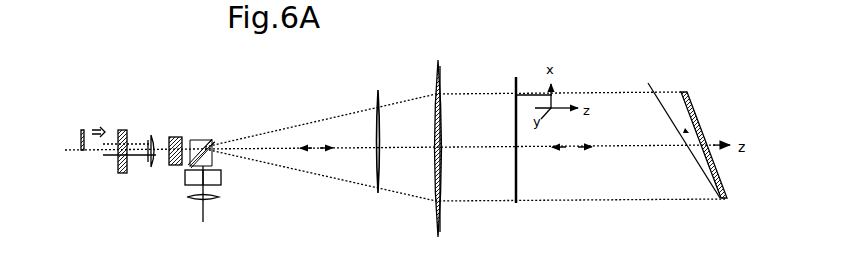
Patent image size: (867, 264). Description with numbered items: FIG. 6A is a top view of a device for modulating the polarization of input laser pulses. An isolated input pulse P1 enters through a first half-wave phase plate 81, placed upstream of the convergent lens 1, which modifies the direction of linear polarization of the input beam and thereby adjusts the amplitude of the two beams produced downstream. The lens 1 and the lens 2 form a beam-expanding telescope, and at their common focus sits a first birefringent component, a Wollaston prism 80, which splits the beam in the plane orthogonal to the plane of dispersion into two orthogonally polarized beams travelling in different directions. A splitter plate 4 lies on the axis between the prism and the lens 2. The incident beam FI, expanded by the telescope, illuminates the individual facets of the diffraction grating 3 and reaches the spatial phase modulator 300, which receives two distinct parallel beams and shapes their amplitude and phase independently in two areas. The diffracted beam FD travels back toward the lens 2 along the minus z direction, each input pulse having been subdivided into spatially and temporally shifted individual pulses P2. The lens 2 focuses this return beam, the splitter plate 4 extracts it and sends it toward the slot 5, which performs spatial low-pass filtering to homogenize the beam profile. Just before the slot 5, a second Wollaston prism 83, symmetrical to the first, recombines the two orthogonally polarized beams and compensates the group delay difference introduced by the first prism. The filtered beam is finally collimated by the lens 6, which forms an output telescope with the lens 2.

The input pulse P1 is at (82, 148).
The first half-wave phase plate 81 is at (121, 174).
The convergent lens 1 is at (150, 132).
The birefringent component (Wollaston prism) 80 is at (175, 136).
The splitter plate 4 is at (209, 141).
The slot 5 is at (186, 181).
The second birefringent Wollaston prism 83 is at (221, 178).
The lens 6 is at (213, 203).
The diffraction grating 3 is at (377, 134).
The convergent lens 2 is at (433, 70).
The incident beam FI is at (530, 74).
The diffracted beam FD is at (638, 74).
The individual pulses P2 is at (650, 84).
The spatial phase modulator 300 is at (700, 122).